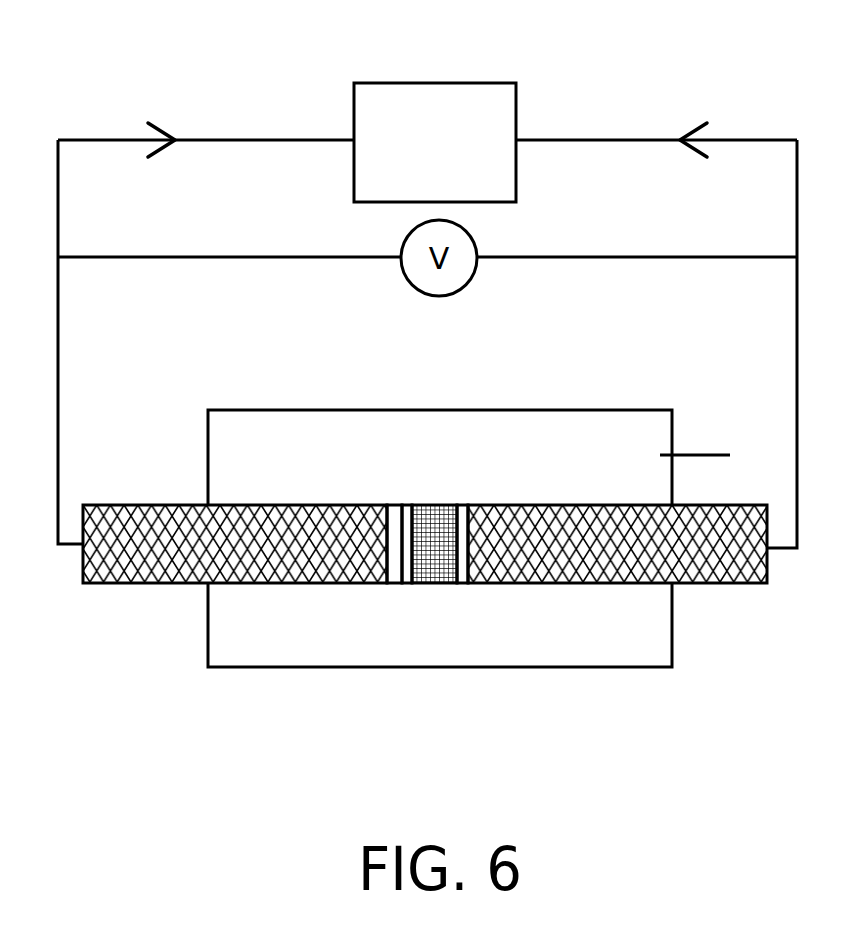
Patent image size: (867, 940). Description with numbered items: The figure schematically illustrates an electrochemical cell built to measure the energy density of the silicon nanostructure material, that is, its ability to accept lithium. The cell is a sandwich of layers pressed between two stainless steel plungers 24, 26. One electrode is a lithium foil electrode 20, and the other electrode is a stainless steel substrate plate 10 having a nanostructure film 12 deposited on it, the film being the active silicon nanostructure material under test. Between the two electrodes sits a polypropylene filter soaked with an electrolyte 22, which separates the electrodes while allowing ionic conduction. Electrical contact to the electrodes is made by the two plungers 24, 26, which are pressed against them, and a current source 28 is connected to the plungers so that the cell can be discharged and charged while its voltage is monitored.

The stainless steel substrate plate 10 is at (395, 520).
The nanostructure film 12 is at (408, 577).
The lithium foil electrode 20 is at (463, 520).
The electrolyte 22 is at (440, 577).
The stainless steel plunger 24 is at (713, 585).
The stainless steel plunger 26 is at (143, 585).
The current source 28 is at (451, 83).